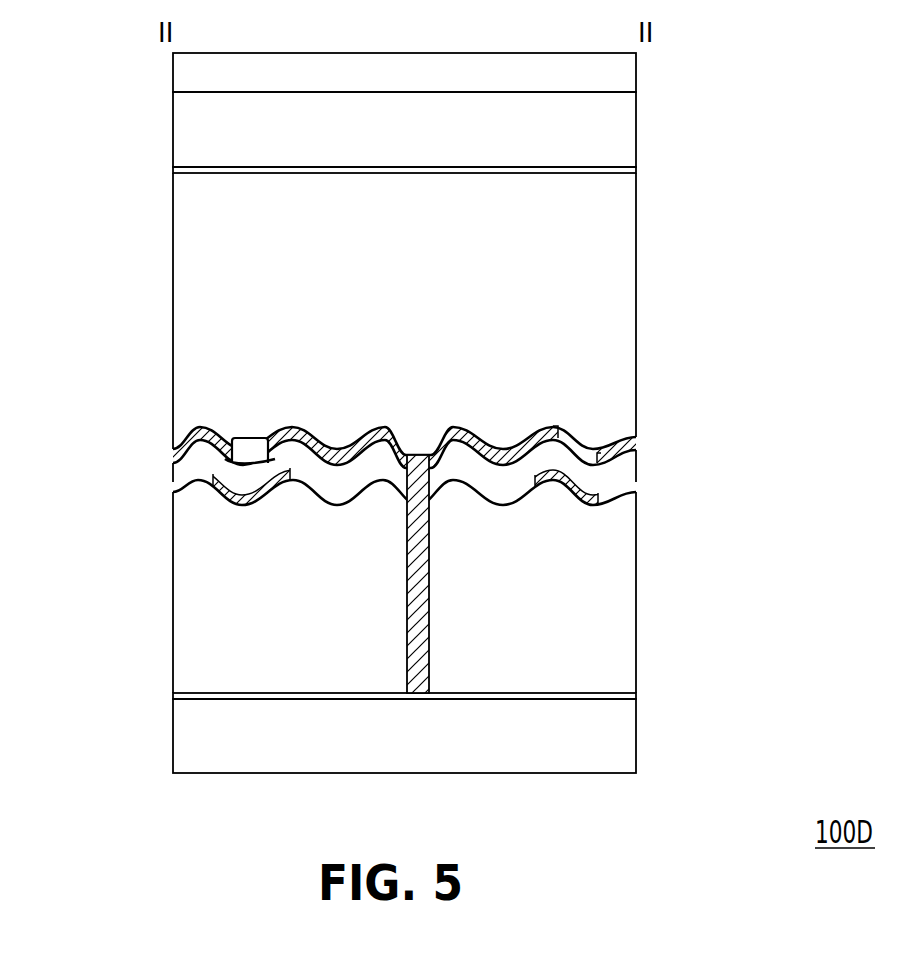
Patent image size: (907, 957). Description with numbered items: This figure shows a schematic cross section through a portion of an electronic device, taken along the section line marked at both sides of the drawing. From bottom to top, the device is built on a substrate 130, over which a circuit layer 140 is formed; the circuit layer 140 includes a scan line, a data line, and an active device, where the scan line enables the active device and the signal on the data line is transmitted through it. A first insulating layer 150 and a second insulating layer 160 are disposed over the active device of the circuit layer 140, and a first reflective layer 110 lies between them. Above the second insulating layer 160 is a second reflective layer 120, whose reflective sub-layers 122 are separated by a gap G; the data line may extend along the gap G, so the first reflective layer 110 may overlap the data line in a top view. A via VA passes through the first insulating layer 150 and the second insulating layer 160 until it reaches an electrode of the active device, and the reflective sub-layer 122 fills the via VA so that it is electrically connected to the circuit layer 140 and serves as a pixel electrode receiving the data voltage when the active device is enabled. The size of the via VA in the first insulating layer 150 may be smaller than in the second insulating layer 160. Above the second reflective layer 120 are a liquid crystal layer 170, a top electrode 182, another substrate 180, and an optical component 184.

The optical component 184 is at (628, 70).
The substrate 180 is at (628, 130).
The top electrode 182 is at (628, 171).
The liquid crystal layer 170 is at (628, 300).
The second insulating layer 160 is at (628, 466).
The first insulating layer 150 is at (628, 613).
The circuit layer 140 is at (628, 697).
The substrate 130 is at (628, 740).
The reflective sub-layer 122 is at (498, 458).
The second reflective layer 120 is at (404, 447).
The first reflective layer 110 is at (600, 497).
The gap G is at (250, 437).
The via VA is at (408, 573).